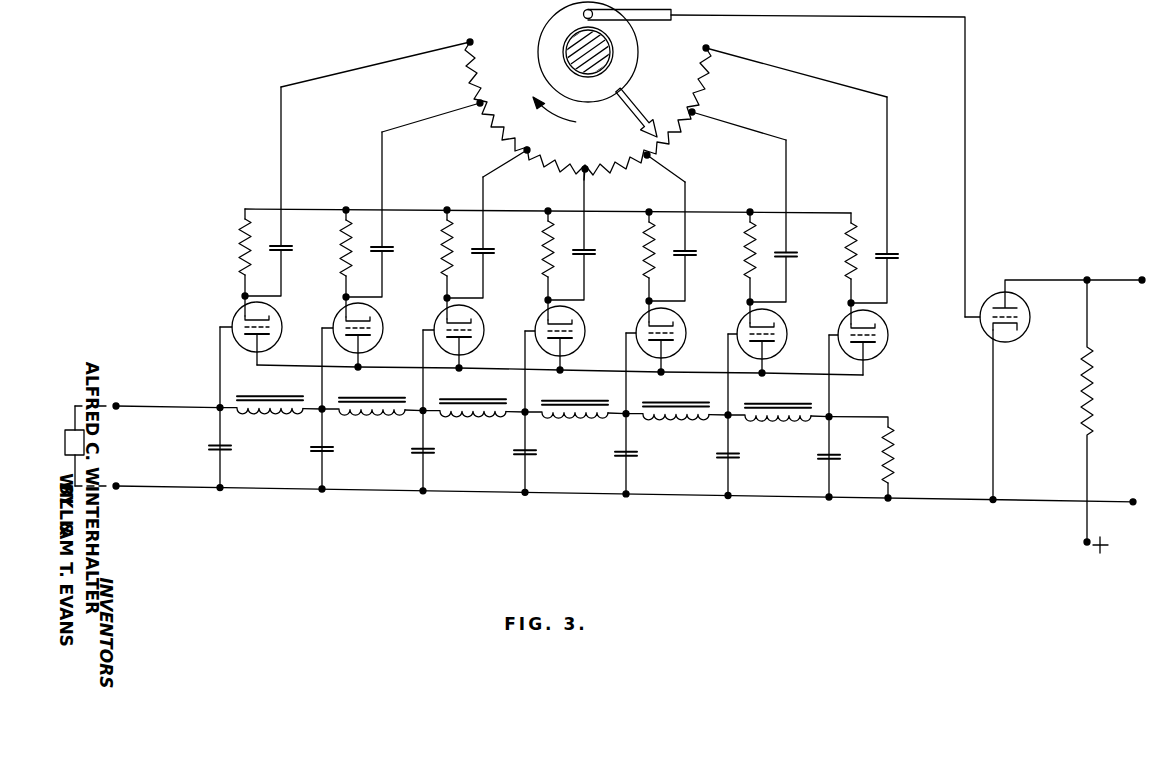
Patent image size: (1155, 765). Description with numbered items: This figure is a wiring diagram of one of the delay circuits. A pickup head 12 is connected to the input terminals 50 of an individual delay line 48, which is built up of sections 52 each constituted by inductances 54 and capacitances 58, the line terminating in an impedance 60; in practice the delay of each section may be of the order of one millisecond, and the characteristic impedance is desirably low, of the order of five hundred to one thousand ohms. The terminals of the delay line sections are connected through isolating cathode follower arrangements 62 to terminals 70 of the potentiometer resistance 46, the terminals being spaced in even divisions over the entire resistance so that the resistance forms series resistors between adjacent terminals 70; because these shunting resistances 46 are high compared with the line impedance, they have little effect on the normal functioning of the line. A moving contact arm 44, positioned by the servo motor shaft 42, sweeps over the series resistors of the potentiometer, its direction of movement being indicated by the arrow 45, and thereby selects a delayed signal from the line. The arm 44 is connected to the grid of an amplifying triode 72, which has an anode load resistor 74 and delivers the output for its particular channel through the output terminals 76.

The pickup head 12 is at (65, 442).
The servo motor shaft 42 is at (572, 37).
The moving contact arm 44 is at (636, 109).
The direction of rotation arrow 45 is at (572, 124).
The potentiometer resistance 46 is at (470, 78).
The delay line 48 is at (779, 522).
The input terminals 50 is at (116, 481).
The delay line sections 52 is at (436, 192).
The inductances 54 is at (267, 414).
The capacitances 58 is at (208, 452).
The impedance 60 is at (893, 459).
The isolating cathode follower arrangements 62 is at (244, 296).
The terminals of the potentiometer resistance 70 is at (523, 150).
The amplifying triode 72 is at (994, 300).
The anode load resistor 74 is at (1092, 402).
The output terminals 76 is at (1142, 284).